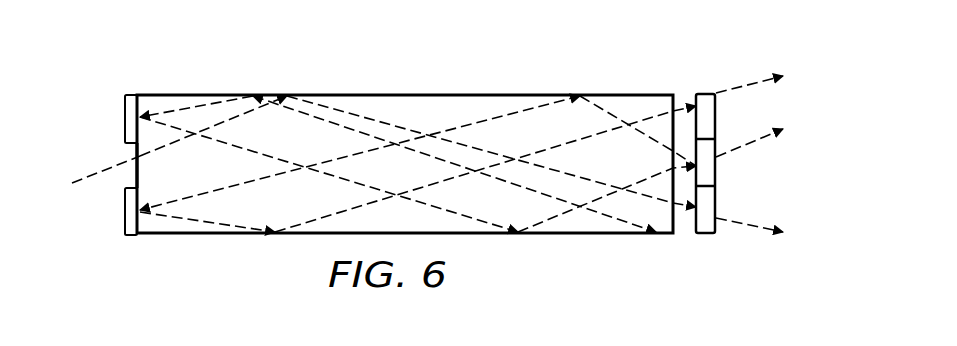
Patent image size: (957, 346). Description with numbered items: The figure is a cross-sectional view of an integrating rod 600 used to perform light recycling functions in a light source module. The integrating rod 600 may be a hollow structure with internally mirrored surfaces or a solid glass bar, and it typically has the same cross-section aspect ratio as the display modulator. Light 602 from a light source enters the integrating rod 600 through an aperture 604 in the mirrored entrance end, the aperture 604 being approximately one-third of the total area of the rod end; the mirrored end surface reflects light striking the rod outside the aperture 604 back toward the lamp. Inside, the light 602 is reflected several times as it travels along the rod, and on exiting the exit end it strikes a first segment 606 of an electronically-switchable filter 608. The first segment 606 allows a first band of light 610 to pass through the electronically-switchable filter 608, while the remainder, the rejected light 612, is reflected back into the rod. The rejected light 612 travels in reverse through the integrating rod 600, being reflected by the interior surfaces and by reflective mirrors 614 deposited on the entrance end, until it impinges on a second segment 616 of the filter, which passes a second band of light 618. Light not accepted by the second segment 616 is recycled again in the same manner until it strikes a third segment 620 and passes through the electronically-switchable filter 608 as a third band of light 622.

The integrating rod 600 is at (390, 93).
The light 602 is at (96, 170).
The aperture 604 is at (127, 186).
The first segment 606 is at (709, 236).
The electronically-switchable filter 608 is at (684, 92).
The first band of light 610 is at (745, 214).
The rejected light 612 is at (342, 129).
The reflective mirrors 614 is at (128, 96).
The second segment 616 is at (716, 173).
The second band of light 618 is at (745, 145).
The third segment 620 is at (706, 97).
The third band of light 622 is at (745, 91).